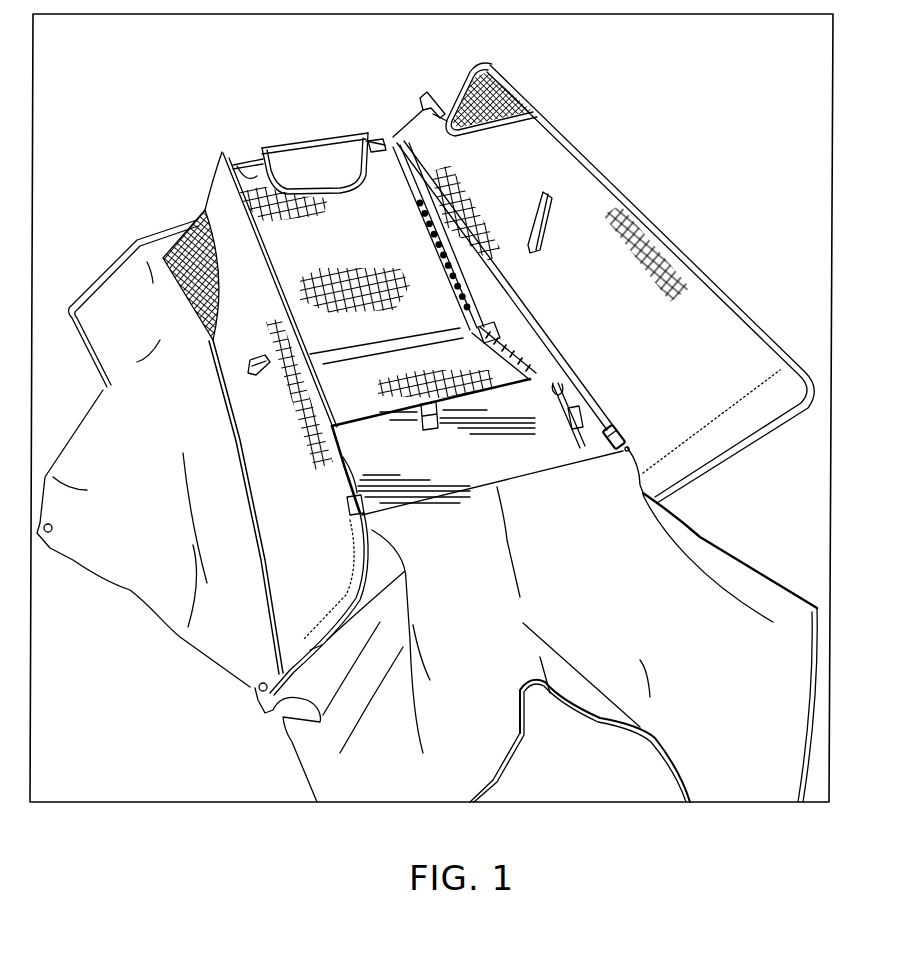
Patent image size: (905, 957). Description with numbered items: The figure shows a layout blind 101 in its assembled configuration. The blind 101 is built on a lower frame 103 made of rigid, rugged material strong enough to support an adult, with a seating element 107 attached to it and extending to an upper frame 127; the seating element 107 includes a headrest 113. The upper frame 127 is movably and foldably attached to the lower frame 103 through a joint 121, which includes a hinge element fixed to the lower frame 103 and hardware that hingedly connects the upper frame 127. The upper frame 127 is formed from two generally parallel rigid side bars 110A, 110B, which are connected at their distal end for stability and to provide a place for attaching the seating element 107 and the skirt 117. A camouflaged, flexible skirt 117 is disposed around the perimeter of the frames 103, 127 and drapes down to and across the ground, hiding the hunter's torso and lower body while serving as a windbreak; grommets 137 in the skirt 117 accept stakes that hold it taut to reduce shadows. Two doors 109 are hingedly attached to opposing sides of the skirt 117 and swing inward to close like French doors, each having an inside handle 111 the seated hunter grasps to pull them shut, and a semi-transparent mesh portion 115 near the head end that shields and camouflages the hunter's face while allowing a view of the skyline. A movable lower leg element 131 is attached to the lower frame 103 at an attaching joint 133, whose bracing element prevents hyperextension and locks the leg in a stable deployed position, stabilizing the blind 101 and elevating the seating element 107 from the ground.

The layout blind 101 is at (203, 171).
The lower frame 103 is at (556, 388).
The seating element 107 is at (372, 140).
The doors 109 is at (295, 471).
The side bar 110A is at (445, 213).
The side bar 110B is at (532, 367).
The handle 111 is at (548, 193).
The headrest 113 is at (298, 160).
The transparent or semi-transparent portion 115 is at (183, 240).
The skirt 117 is at (148, 590).
The joint 121 is at (493, 326).
The upper frame 127 is at (455, 256).
The lower leg element 131 is at (598, 422).
The attaching joint 133 is at (577, 417).
The grommets 137 is at (50, 533).